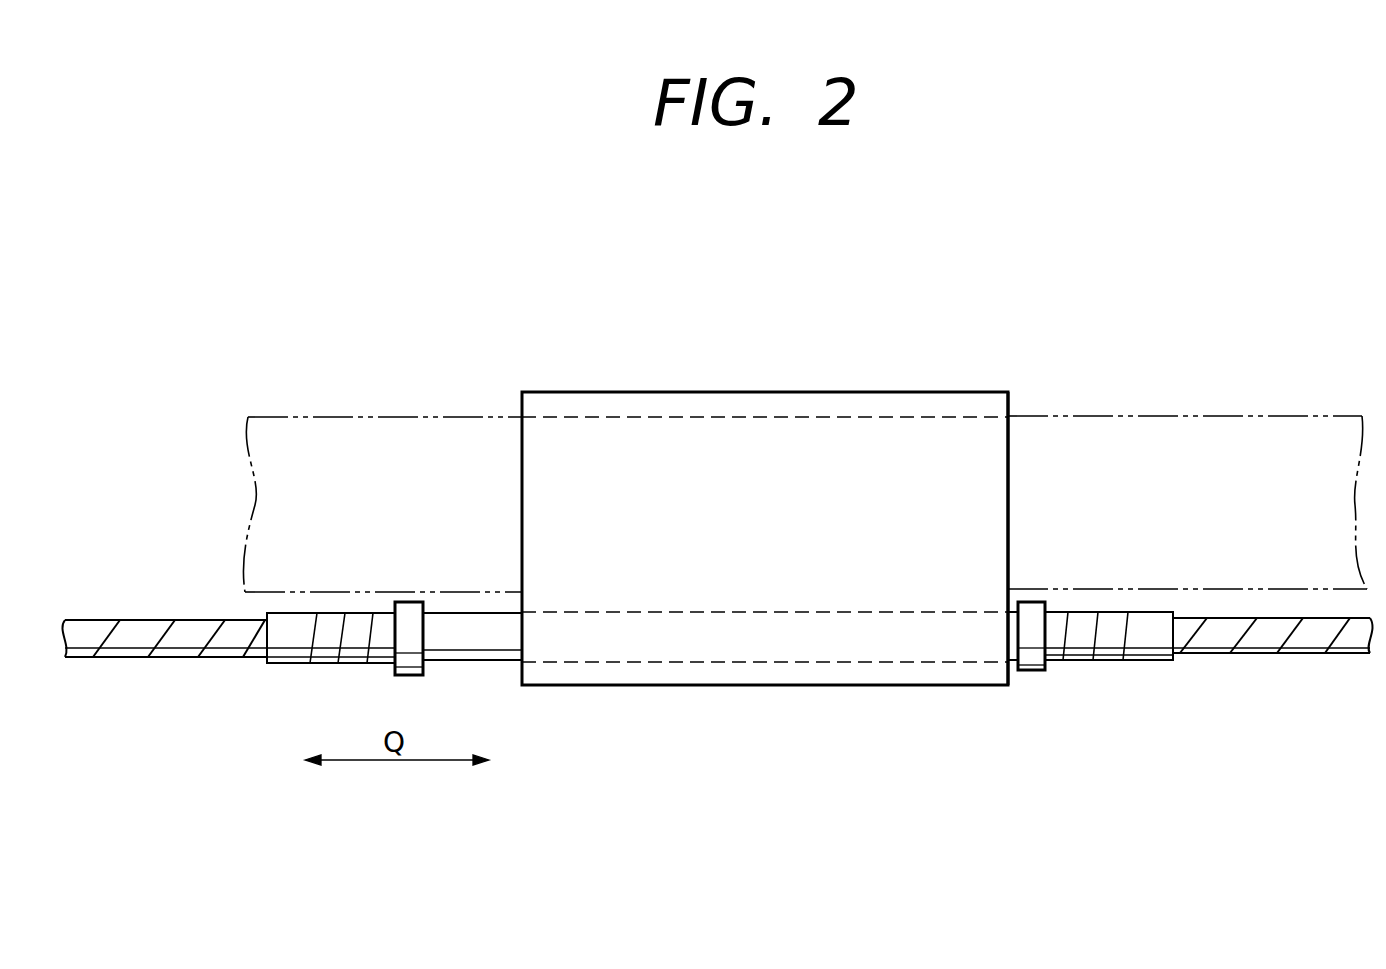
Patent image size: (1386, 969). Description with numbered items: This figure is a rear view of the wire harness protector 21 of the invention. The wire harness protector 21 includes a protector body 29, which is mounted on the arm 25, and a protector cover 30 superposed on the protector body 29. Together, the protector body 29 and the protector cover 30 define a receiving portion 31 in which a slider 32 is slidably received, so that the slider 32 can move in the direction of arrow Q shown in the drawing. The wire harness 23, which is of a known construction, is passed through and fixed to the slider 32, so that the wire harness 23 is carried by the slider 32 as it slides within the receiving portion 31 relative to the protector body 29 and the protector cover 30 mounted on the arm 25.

The wire harness protector 21 is at (717, 479).
The wire harness 23 is at (1260, 640).
The arm 25 is at (417, 428).
The protector body 29 is at (937, 450).
The protector cover 30 is at (833, 432).
The receiving portion 31 is at (822, 643).
The slider 32 is at (470, 638).